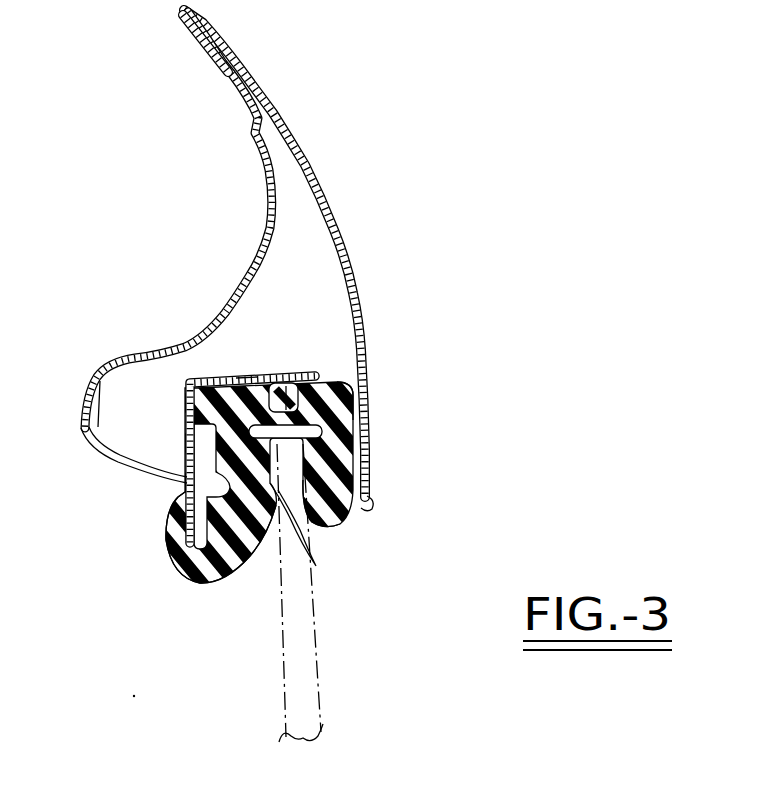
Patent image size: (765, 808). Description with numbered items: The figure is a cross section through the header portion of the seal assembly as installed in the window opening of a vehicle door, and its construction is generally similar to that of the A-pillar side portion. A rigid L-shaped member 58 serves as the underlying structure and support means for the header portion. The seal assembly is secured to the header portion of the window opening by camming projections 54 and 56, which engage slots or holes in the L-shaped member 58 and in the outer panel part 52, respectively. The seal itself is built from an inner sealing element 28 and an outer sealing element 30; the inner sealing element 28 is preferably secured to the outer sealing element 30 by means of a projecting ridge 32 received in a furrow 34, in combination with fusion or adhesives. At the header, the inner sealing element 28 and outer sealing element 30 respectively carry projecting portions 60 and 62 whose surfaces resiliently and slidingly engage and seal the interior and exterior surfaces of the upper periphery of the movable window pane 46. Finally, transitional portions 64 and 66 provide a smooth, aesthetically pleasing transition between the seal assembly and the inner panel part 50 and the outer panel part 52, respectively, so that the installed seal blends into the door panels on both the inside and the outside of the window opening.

The inner sealing element 28 is at (218, 620).
The outer sealing element 30 is at (345, 446).
The projecting ridge 32 is at (290, 402).
The furrow 34 is at (274, 390).
The movable window pane 46 is at (303, 674).
The inner panel part 50 is at (160, 356).
The outer panel part 52 is at (337, 257).
The camming projection 54 is at (186, 423).
The camming projection 56 is at (358, 404).
The L-shaped member 58 is at (236, 375).
The projecting portion 60 is at (293, 537).
The projecting portion 62 is at (303, 513).
The transitional portion 64 is at (172, 517).
The transitional portion 66 is at (375, 506).